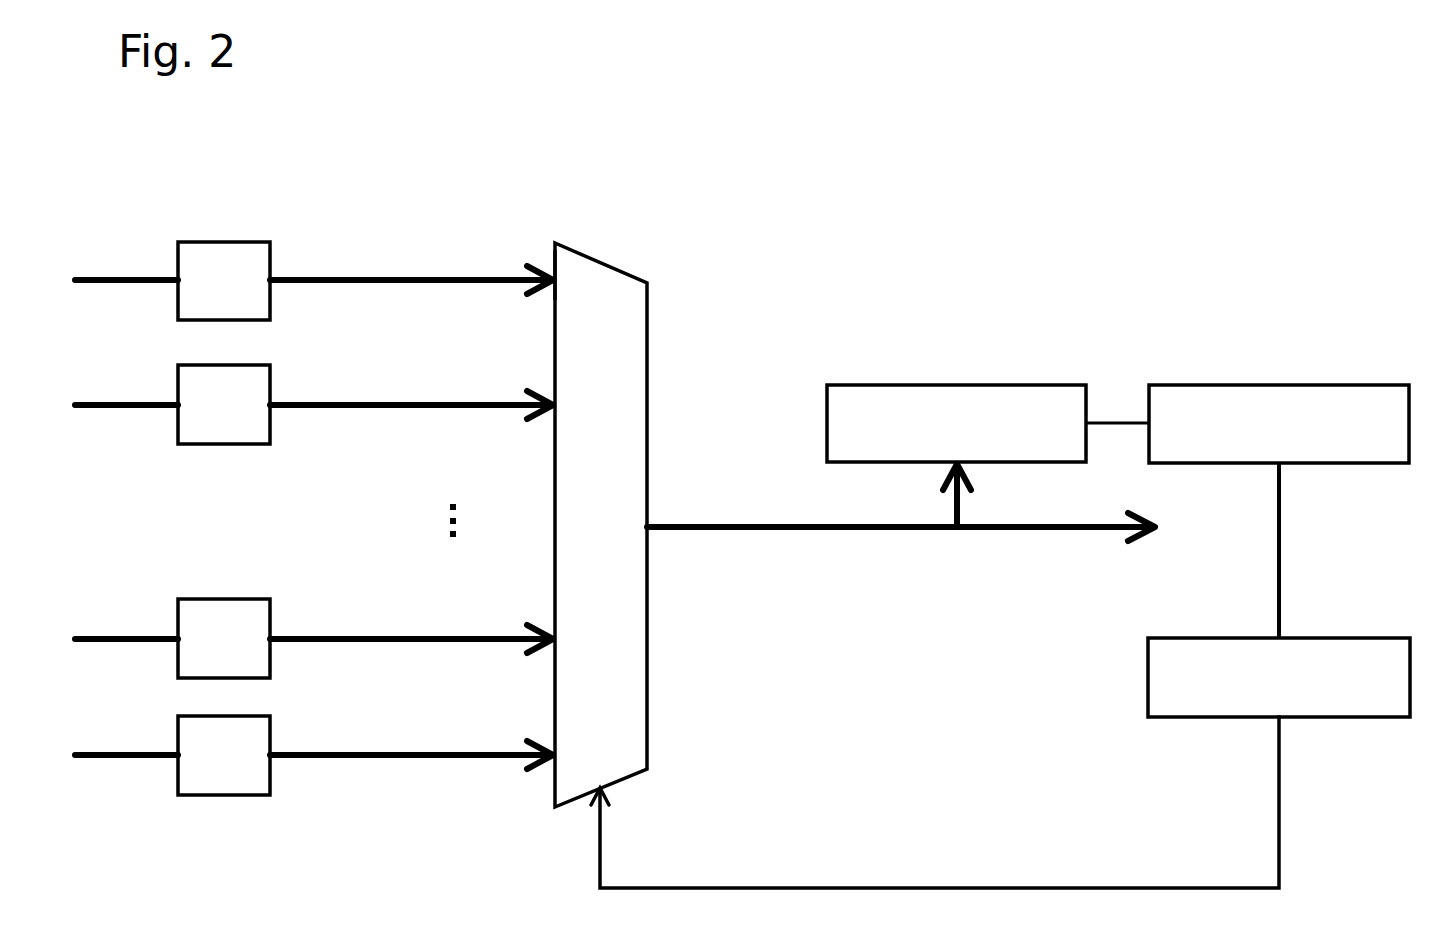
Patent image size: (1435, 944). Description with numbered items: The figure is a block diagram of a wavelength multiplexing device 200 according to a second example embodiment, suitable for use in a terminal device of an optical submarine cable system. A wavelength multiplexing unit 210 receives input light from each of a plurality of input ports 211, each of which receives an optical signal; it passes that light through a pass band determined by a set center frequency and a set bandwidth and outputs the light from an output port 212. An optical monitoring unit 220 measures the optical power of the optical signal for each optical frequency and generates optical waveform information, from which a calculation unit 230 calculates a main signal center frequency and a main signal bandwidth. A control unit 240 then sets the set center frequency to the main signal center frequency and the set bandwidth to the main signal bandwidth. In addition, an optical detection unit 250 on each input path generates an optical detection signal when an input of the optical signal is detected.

The wavelength multiplexing device 200 is at (940, 150).
The wavelength multiplexing unit 210 is at (598, 262).
The input port 211 is at (553, 272).
The output port 212 is at (648, 526).
The optical monitoring unit 220 is at (955, 385).
The calculation unit 230 is at (1280, 385).
The control unit 240 is at (1148, 672).
The optical detection unit 250 is at (218, 243).